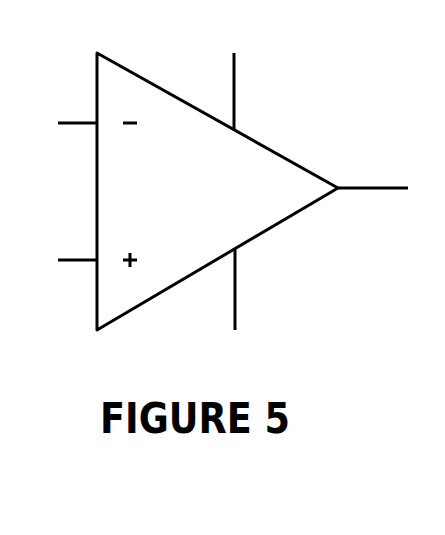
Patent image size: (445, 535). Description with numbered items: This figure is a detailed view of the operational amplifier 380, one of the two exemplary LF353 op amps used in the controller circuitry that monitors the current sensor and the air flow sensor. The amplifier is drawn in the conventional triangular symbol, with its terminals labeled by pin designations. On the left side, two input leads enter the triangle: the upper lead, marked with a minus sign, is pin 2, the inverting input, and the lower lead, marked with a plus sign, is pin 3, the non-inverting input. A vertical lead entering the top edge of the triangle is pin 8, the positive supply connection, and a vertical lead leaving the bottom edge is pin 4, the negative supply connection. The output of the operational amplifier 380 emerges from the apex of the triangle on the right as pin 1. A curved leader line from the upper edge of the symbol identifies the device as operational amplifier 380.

The operational amplifier 380 is at (275, 150).
The inverting input terminal 2 is at (77, 108).
The non-inverting input terminal 3 is at (77, 247).
The positive supply terminal 8 is at (250, 91).
The negative supply terminal 4 is at (250, 289).
The output terminal 1 is at (373, 172).